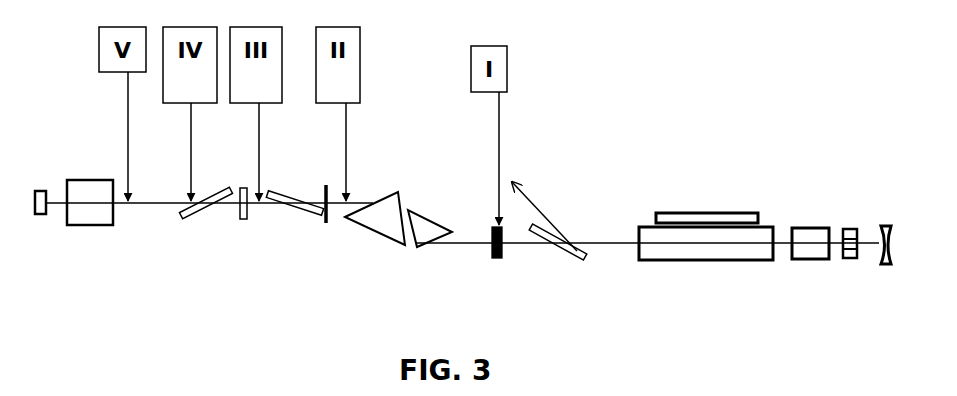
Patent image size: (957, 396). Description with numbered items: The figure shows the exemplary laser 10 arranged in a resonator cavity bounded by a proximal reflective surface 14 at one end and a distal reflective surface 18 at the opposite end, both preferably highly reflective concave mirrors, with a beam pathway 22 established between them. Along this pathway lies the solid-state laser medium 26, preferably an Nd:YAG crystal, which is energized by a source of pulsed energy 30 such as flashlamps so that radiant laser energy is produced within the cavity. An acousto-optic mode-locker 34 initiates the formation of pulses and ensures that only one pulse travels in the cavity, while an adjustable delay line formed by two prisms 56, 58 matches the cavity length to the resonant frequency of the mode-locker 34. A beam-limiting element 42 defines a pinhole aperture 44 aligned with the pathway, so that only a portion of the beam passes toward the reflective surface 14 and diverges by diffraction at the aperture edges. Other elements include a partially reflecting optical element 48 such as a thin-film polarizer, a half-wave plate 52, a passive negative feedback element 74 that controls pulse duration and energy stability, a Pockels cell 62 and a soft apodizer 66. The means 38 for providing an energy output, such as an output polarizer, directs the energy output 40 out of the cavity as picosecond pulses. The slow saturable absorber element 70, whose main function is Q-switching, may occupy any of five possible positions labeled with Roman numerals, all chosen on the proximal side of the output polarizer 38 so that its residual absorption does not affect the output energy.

The laser 10 is at (368, 140).
The reflective surface 14 is at (38, 219).
The reflective surface 18 is at (884, 221).
The beam pathway 22 is at (587, 237).
The solid-state laser medium 26 is at (687, 263).
The source of pulsed energy 30 is at (685, 208).
The acousto-optic mode-locker 34 is at (81, 173).
The means for providing an energy output 38 is at (553, 251).
The energy output 40 is at (531, 189).
The beam-limiting element 42 is at (333, 225).
The aperture 44 is at (321, 201).
The partially reflecting optical element 48 is at (172, 216).
The half-wave plate 52 is at (239, 222).
The prism 56 is at (373, 239).
The prism 58 is at (424, 210).
The Pockels cell 62 is at (808, 263).
The soft apodizer 66 is at (852, 262).
The saturable absorber element 70 is at (494, 264).
The passive negative feedback element 74 is at (268, 208).